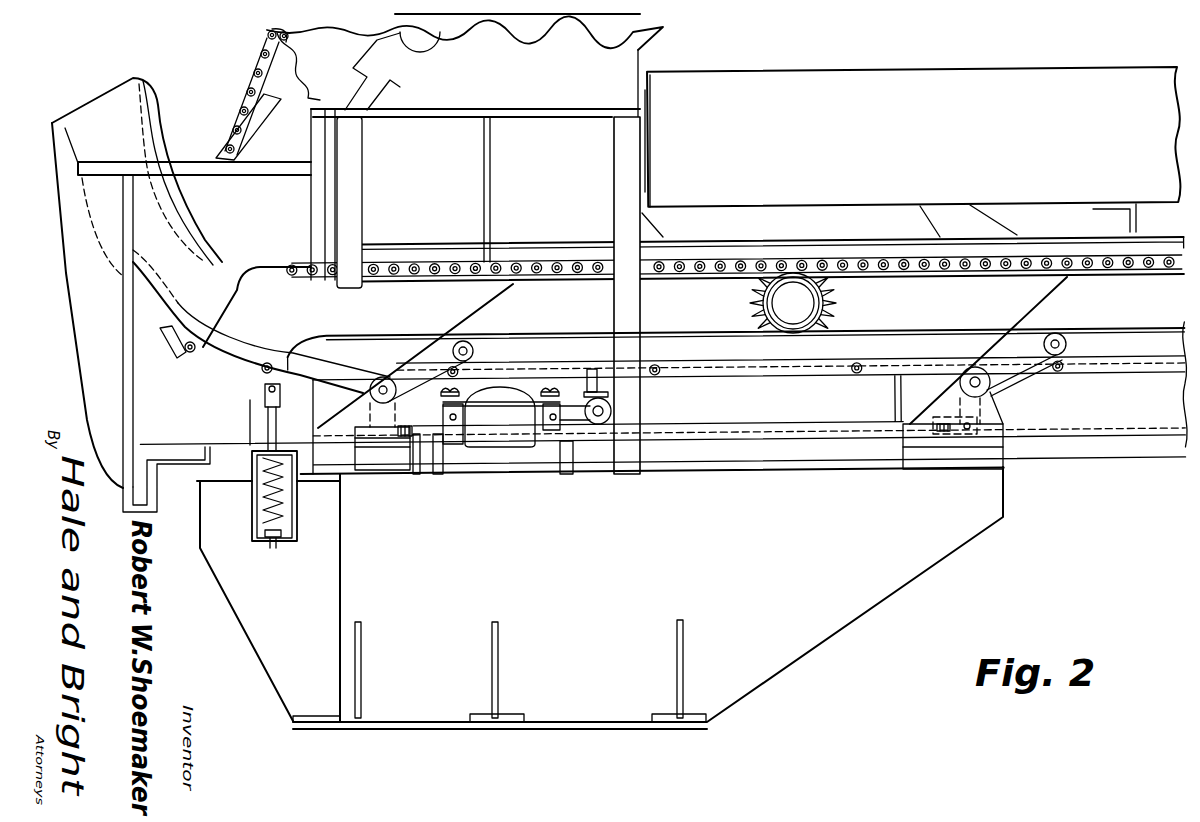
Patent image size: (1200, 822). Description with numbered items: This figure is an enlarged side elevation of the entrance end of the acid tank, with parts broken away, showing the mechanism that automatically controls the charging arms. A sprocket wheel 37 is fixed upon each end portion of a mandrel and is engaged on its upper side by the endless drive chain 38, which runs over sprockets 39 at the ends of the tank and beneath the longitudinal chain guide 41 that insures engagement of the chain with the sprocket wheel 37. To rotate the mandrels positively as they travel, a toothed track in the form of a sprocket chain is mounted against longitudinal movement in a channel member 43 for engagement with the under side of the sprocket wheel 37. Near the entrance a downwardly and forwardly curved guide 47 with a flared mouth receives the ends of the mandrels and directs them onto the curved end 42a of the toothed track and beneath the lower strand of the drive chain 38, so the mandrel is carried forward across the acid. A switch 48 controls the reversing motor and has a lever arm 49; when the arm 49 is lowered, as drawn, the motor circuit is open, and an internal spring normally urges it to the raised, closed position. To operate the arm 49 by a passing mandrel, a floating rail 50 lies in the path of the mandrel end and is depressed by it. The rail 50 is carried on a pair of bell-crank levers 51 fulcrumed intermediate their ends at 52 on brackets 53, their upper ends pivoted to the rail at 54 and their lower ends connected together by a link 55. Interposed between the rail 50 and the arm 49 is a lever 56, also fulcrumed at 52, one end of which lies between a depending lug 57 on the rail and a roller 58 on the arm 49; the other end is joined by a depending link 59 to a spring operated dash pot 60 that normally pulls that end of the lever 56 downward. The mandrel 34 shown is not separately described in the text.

The conveyor shaft 34 is at (783, 317).
The sprocket wheel 37 is at (840, 310).
The endless drive chain 38 is at (856, 265).
The sprocket 39 is at (293, 60).
The longitudinal chain guide 41 is at (800, 250).
The curved end of toothed track 42a is at (231, 342).
The channel member 43 is at (806, 374).
The curved guide 47 is at (158, 115).
The switch 48 is at (527, 421).
The lever arm 49 is at (573, 418).
The floating rail 50 is at (550, 344).
The bell-crank lever 51 is at (433, 361).
The fulcrum 52 is at (387, 388).
The bracket 53 is at (357, 427).
The pivot 54 is at (467, 343).
The link 55 is at (767, 428).
The lever 56 is at (427, 397).
The depending lug 57 is at (597, 375).
The roller 58 is at (612, 412).
The depending link 59 is at (278, 425).
The spring operated dash pot 60 is at (252, 507).